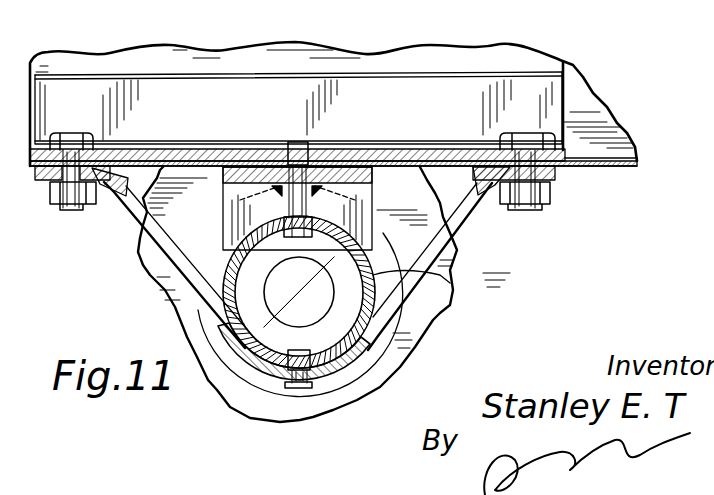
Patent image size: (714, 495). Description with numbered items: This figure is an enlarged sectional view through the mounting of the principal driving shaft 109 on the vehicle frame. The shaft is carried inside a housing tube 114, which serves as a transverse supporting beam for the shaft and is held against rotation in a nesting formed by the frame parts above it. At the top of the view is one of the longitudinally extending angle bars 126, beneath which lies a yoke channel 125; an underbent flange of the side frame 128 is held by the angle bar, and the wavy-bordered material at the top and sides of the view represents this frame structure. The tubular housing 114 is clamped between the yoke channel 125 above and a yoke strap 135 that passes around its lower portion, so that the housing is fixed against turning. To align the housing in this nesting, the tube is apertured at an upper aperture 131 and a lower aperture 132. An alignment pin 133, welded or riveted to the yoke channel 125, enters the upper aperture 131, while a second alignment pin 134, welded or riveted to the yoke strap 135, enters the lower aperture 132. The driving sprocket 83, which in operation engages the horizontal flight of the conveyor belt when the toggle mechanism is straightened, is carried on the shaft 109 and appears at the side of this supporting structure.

The angle bar 126 is at (358, 92).
The side frame 128 is at (584, 108).
The yoke channel 125 is at (400, 162).
The alignment pin 133 is at (265, 147).
The aperture 131 is at (232, 217).
The yoke strap 135 is at (477, 203).
The driving sprocket 83 is at (180, 305).
The housing tube 114 is at (453, 313).
The principal driving shaft 109 is at (323, 318).
The alignment pin 134 is at (260, 363).
The aperture 132 is at (327, 372).